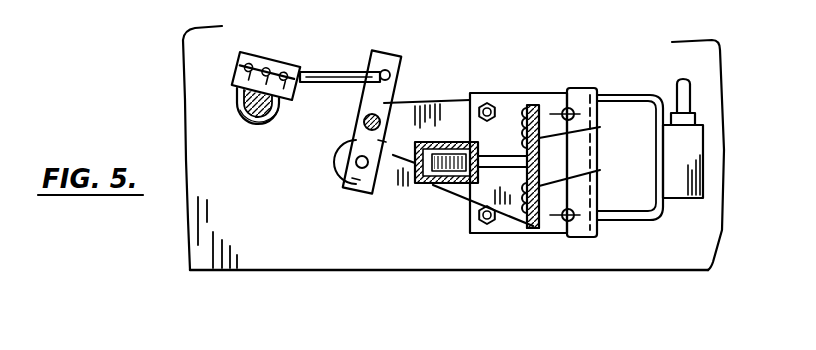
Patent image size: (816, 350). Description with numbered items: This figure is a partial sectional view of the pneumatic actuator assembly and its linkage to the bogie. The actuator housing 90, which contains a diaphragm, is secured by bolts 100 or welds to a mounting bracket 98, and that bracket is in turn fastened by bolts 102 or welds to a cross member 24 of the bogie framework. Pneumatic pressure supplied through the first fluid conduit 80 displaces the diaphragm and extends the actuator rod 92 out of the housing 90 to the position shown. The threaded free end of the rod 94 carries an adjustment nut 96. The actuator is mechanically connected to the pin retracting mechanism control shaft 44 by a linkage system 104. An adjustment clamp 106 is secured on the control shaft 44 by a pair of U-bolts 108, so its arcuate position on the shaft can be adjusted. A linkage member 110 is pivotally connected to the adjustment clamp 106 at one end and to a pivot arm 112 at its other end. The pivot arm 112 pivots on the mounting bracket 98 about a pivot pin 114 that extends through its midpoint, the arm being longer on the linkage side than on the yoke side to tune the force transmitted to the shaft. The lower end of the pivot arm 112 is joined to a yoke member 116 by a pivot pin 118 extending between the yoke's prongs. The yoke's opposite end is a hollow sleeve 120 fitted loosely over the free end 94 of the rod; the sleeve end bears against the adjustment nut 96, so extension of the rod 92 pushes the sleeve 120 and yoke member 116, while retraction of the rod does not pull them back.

The cross member 24 is at (348, 262).
The pin retracting mechanism control shaft 44 is at (257, 124).
The first fluid conduit 80 is at (697, 84).
The actuator housing 90 is at (584, 88).
The actuator rod 92 is at (505, 148).
The free end of the rod 94 is at (457, 142).
The adjustment nut 96 is at (470, 142).
The mounting bracket 98 is at (533, 232).
The bolts 100 is at (594, 162).
The bolts 102 is at (490, 105).
The linkage system 104 is at (293, 240).
The adjustment clamp 106 is at (268, 57).
The U-bolts 108 is at (237, 102).
The linkage member 110 is at (332, 72).
The pivot arm 112 is at (393, 66).
The pivot pin 114 is at (363, 123).
The yoke member 116 is at (385, 187).
The pivot pin 118 is at (345, 176).
The hollow sleeve 120 is at (440, 186).